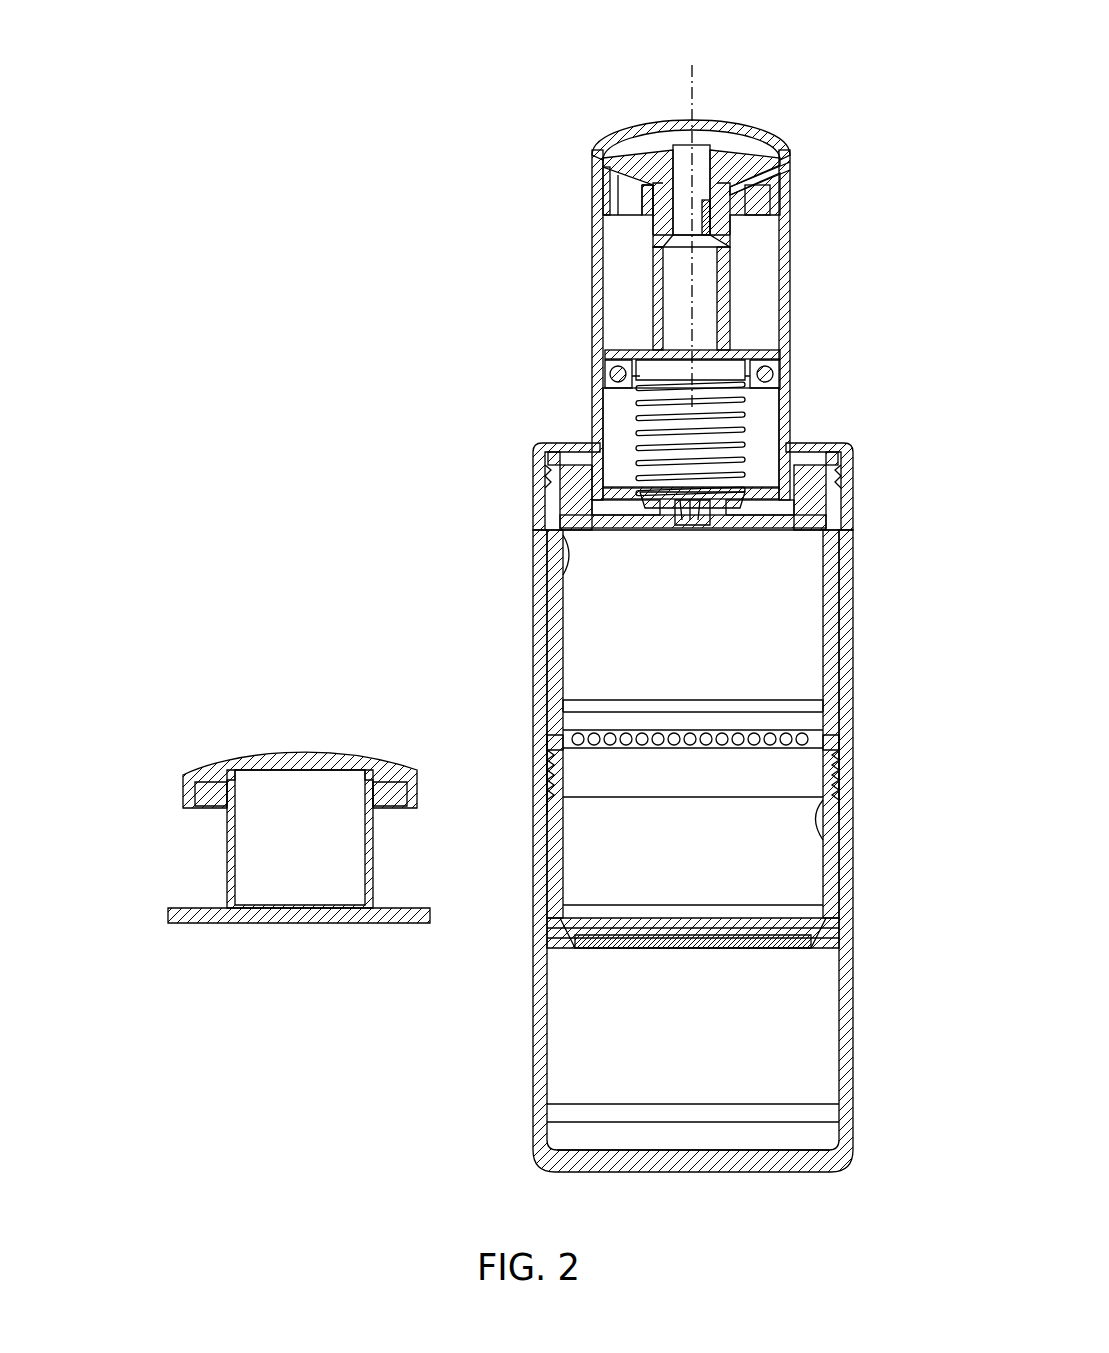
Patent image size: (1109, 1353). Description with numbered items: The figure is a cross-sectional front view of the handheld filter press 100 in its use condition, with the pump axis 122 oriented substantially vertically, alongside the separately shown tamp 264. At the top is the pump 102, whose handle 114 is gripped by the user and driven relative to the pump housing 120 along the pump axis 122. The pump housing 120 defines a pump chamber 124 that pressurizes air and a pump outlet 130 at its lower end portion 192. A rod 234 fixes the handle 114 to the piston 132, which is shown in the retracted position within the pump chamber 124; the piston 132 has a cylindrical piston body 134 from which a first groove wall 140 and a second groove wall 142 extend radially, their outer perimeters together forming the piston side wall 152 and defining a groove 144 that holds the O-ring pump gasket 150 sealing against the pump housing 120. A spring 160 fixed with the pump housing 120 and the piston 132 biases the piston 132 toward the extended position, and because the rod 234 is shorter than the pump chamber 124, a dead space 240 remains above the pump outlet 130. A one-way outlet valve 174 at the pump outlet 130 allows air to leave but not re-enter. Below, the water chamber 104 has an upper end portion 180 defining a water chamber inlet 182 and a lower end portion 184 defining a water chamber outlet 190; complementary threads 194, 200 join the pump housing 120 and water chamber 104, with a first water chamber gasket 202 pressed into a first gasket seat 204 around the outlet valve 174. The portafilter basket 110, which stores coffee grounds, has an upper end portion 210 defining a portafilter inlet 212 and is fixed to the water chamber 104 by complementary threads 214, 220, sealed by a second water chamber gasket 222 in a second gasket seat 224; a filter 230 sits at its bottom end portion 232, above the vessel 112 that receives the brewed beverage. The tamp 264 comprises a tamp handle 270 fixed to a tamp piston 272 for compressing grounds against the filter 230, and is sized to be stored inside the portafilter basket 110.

The handheld filter press 100 is at (912, 54).
The pump 102 is at (735, 200).
The water chamber 104 is at (855, 645).
The portafilter basket 110 is at (845, 905).
The vessel 112 is at (850, 1045).
The handle 114 is at (755, 140).
The pump housing 120 is at (745, 245).
The pump axis 122 is at (696, 95).
The pump chamber 124 is at (780, 408).
The pump outlet 130 is at (675, 540).
The piston 132 is at (632, 350).
The piston body 134 is at (625, 358).
The first groove wall 140 is at (760, 300).
The second groove wall 142 is at (773, 360).
The groove 144 is at (600, 362).
The pump gasket 150 is at (770, 352).
The piston side wall 152 is at (605, 378).
The spring 160 is at (830, 480).
The outlet valve 174 is at (690, 530).
The upper end portion of the water chamber 180 is at (835, 527).
The water chamber inlet 182 is at (560, 580).
The lower end portion of the water chamber 184 is at (820, 737).
The water chamber outlet 190 is at (810, 712).
The lower end portion of the pump housing 192 is at (850, 460).
The thread 194 is at (548, 466).
The thread 200 is at (545, 490).
The first water chamber gasket 202 is at (810, 452).
The first gasket seat 204 is at (780, 412).
The upper end portion of the portafilter basket 210 is at (547, 790).
The portafilter inlet 212 is at (558, 770).
The thread 214 is at (838, 780).
The thread 220 is at (850, 820).
The second water chamber gasket 222 is at (835, 745).
The second gasket seat 224 is at (560, 748).
The filter 230 is at (840, 925).
The bottom end portion of the portafilter basket 232 is at (845, 945).
The rod 234 is at (648, 290).
The dead space 240 is at (614, 462).
The tamp 264 is at (230, 865).
The tamp handle 270 is at (183, 800).
The tamp piston 272 is at (400, 905).